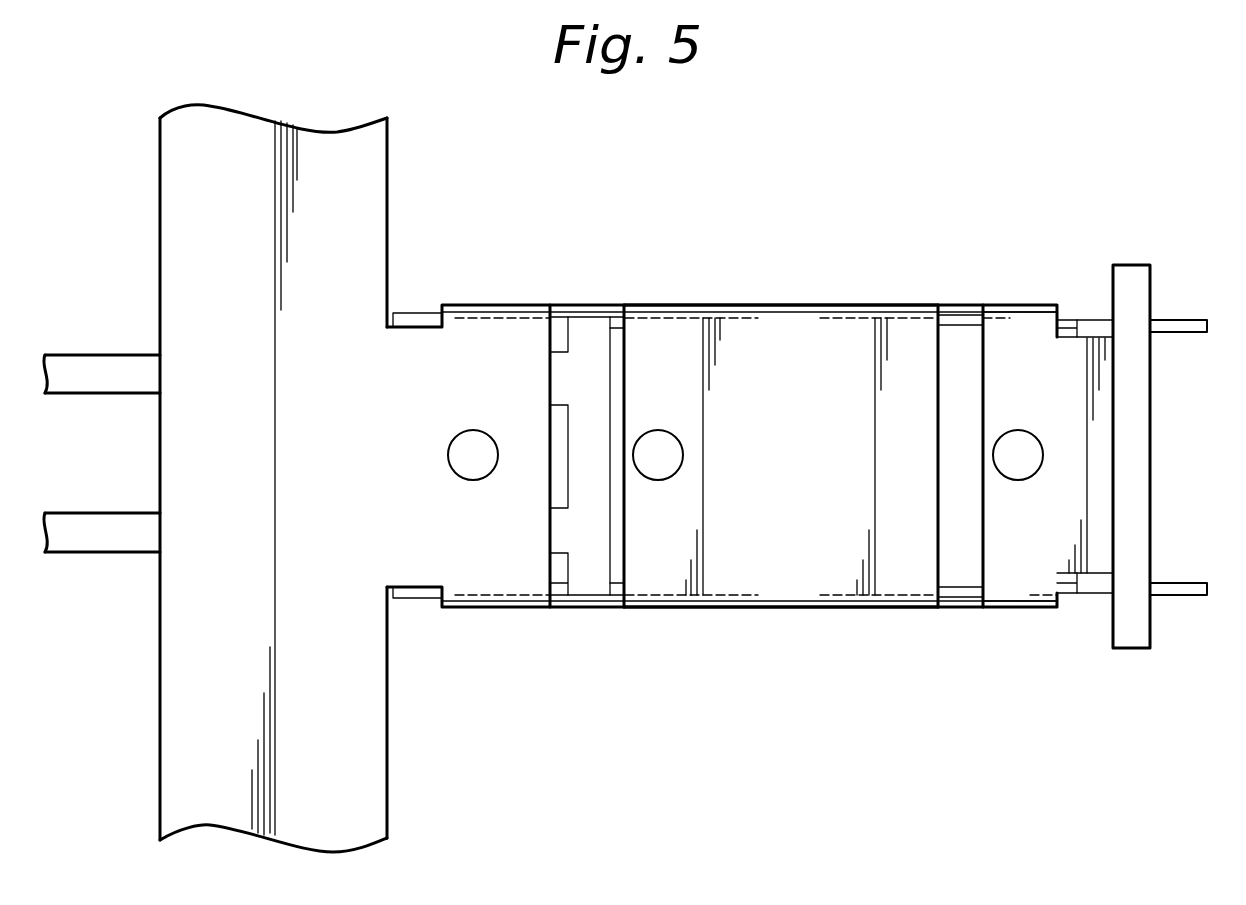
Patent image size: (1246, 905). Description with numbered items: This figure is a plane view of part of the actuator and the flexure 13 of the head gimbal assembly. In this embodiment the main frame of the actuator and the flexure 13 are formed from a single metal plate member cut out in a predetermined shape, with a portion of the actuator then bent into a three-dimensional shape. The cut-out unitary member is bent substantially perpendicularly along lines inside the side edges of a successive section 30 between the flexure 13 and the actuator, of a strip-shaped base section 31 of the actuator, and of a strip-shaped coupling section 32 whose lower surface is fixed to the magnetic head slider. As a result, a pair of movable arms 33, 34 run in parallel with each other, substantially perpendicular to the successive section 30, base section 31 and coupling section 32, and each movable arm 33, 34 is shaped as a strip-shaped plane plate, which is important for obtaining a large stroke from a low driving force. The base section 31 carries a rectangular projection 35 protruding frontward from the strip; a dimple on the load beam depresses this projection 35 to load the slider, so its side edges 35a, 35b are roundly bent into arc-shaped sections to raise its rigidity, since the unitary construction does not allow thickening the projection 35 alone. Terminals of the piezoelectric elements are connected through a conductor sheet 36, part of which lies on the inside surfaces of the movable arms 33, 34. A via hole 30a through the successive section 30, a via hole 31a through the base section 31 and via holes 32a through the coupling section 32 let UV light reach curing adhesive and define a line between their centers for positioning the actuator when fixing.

The flexure 13 is at (368, 755).
The successive section 30 is at (488, 585).
The via hole 30a is at (486, 436).
The base section 31 is at (673, 575).
The via hole 31a is at (664, 436).
The coupling section 32 is at (1017, 555).
The via holes 32a is at (1029, 436).
The movable arm 33 is at (953, 600).
The movable arm 34 is at (957, 310).
The rectangular projection 35 is at (845, 548).
The side edge of projection 35a is at (790, 608).
The side edge of projection 35b is at (795, 330).
The conductor sheet 36 is at (110, 390).